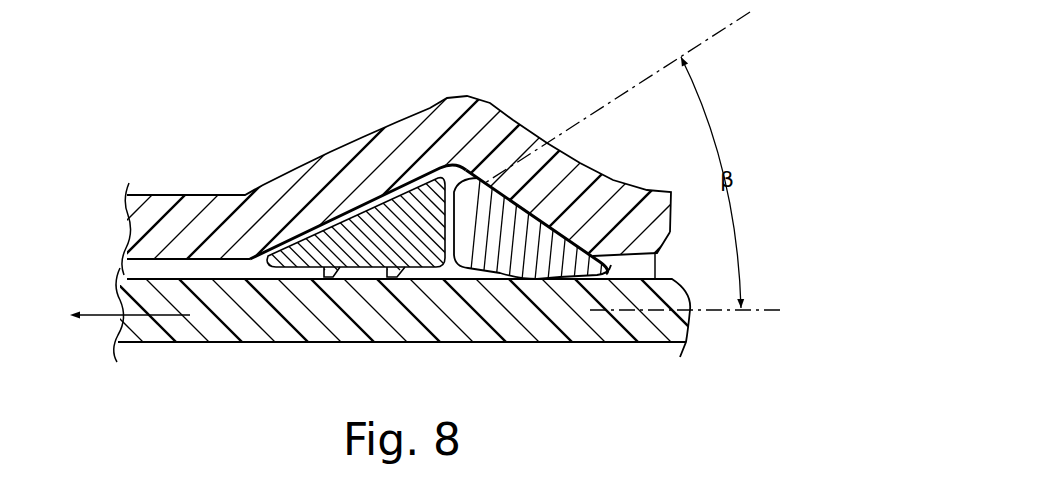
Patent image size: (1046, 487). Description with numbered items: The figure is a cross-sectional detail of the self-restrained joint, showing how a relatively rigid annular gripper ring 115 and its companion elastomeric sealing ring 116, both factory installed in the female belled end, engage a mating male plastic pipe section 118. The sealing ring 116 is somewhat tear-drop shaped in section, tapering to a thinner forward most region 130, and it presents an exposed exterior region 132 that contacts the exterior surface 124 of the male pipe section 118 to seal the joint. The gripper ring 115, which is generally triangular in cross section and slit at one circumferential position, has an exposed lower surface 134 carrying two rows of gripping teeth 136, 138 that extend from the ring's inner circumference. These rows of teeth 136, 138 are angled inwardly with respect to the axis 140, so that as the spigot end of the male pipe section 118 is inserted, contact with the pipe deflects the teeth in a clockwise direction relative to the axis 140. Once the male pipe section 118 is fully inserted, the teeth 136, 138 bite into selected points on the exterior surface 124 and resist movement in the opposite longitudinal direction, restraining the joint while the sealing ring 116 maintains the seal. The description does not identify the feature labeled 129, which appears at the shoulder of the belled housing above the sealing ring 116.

The gripper ring 115 is at (397, 194).
The sealing ring 116 is at (536, 200).
The male plastic pipe section 118 is at (213, 328).
The exterior surface 124 is at (233, 284).
The shoulder of housing 129 is at (483, 172).
The thinner forward most region 130 is at (660, 254).
The exposed exterior region 132 is at (536, 226).
The exposed lower surface 134 is at (292, 268).
The gripping teeth 136 is at (338, 273).
The gripping teeth 138 is at (405, 271).
The axis 140 is at (703, 313).